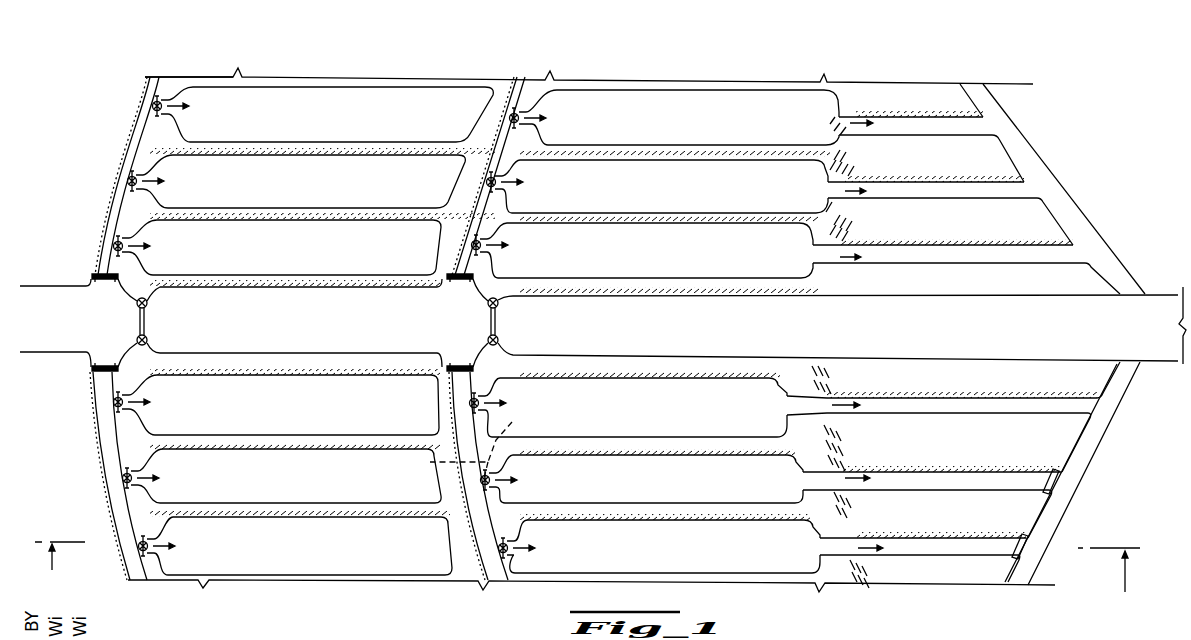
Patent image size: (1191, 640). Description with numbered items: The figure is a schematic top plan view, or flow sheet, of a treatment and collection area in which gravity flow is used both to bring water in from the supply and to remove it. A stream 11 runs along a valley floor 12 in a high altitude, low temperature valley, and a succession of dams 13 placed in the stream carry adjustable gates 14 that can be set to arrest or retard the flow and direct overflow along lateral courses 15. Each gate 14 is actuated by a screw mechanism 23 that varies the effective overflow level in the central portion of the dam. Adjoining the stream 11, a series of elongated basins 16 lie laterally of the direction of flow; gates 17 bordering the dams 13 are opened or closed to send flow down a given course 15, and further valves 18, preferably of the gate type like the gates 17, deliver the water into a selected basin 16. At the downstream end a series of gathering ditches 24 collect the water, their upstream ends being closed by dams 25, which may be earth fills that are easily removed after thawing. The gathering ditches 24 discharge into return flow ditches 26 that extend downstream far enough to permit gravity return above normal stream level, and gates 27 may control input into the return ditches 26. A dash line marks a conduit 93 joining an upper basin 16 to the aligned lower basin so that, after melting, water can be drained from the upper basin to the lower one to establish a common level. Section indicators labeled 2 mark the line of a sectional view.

The stream 11 is at (73, 321).
The valley floor 12 is at (98, 155).
The dam 13 is at (148, 343).
The adjustable gate 14 is at (146, 320).
The lateral course 15 is at (108, 197).
The basin 16 is at (328, 126).
The gate 17 is at (94, 275).
The valve 18 is at (117, 246).
The screw mechanism 23 is at (133, 305).
The gathering ditch 24 is at (913, 125).
The dam 25 is at (842, 210).
The return flow ditch 26 is at (1062, 205).
The gate 27 is at (1060, 470).
The conduit 93 is at (484, 442).
The section line 2- 2 is at (587, 580).